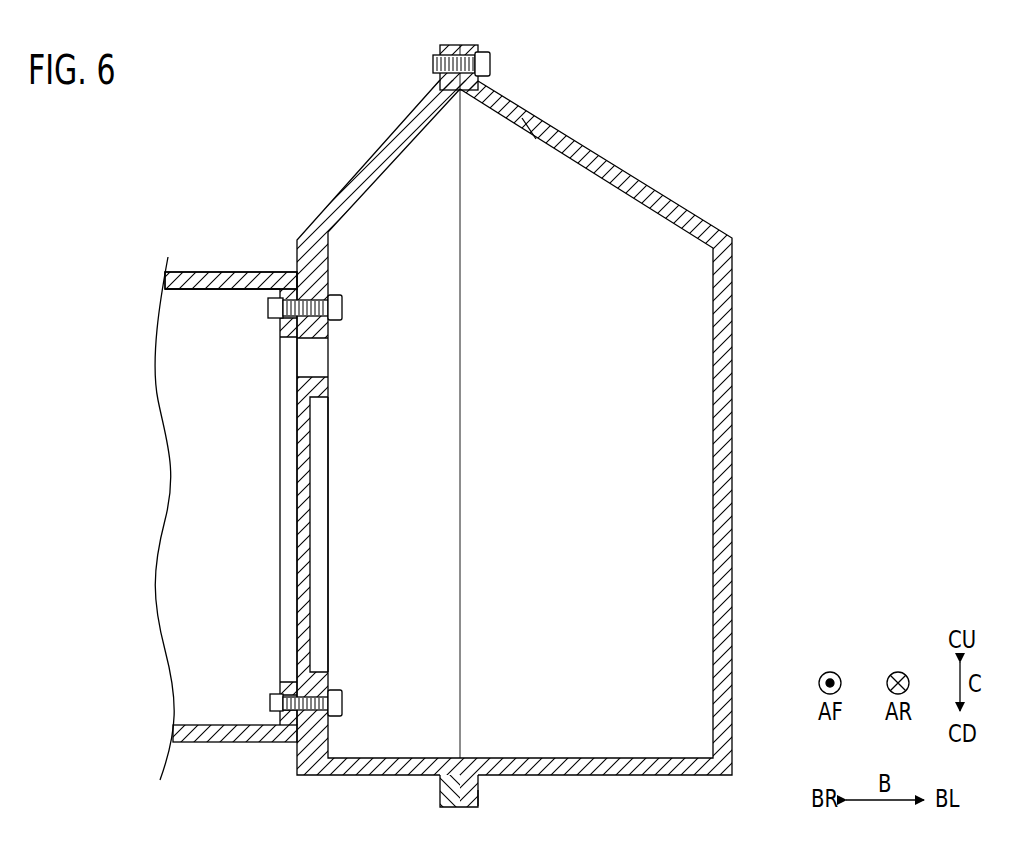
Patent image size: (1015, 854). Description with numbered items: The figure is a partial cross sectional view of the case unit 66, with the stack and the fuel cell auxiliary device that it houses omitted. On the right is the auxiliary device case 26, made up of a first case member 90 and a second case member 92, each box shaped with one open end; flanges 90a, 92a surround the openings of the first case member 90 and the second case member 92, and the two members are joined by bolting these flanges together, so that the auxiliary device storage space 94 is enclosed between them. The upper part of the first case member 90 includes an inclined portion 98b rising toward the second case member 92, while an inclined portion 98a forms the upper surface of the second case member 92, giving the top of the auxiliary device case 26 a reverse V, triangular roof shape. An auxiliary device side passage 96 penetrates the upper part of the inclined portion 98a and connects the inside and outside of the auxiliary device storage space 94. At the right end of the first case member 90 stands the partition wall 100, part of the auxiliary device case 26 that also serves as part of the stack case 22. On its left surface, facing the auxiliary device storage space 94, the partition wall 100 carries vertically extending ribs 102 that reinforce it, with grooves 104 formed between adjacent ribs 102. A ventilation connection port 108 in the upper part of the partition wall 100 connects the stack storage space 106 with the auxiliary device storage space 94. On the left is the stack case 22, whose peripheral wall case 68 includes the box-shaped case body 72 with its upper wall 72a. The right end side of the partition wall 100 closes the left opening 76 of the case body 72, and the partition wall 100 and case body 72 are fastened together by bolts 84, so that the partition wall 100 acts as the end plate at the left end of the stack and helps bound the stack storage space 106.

The case unit 66 is at (736, 82).
The auxiliary device case 26 is at (707, 209).
The inclined portion 98a is at (612, 172).
The inclined portion 98b is at (378, 160).
The auxiliary device side passage 96 is at (530, 126).
The auxiliary device storage space 94 is at (718, 425).
The second case member 92 is at (601, 770).
The first case member 90 is at (318, 776).
The flange 90a is at (438, 50).
The flange 92a is at (474, 46).
The partition wall 100 is at (302, 535).
The rib 102 is at (329, 600).
The groove 104 is at (311, 637).
The ventilation connection port 108 is at (315, 378).
The bolt 84 is at (342, 308).
The left opening 76 is at (283, 332).
The upper wall 72a is at (228, 272).
The case body 72 is at (199, 743).
The peripheral wall case 68 is at (164, 518).
The stack case 22 is at (257, 262).
The stack storage space 106 is at (193, 290).